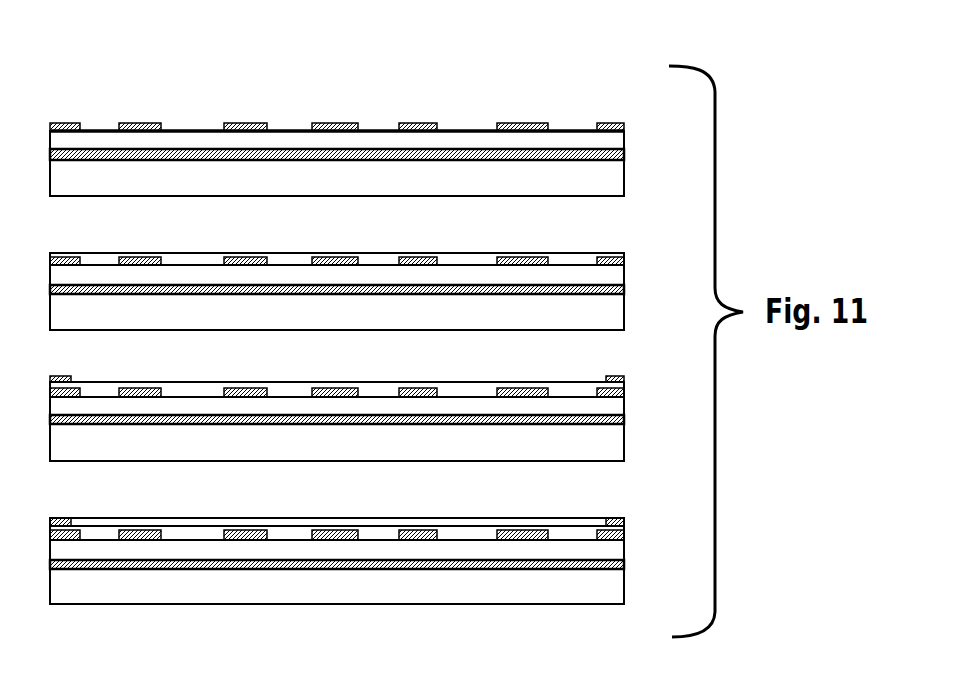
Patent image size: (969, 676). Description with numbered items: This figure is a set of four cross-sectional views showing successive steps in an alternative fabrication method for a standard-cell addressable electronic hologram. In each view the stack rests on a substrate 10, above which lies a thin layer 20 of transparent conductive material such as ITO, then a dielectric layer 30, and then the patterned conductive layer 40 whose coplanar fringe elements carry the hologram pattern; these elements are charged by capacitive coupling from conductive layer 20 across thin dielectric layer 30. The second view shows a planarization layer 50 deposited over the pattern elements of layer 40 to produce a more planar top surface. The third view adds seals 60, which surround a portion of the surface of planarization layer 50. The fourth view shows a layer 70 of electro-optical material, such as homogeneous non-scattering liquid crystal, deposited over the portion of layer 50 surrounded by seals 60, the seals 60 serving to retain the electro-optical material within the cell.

The substrate 10 is at (588, 177).
The thin layer of transparent conductive material 20 is at (613, 157).
The dielectric layer 30 is at (597, 137).
The patterned conductive layer 40 is at (548, 123).
The planarization layer 50 is at (195, 262).
The seals 60 is at (610, 375).
The electro-optical material layer 70 is at (140, 523).